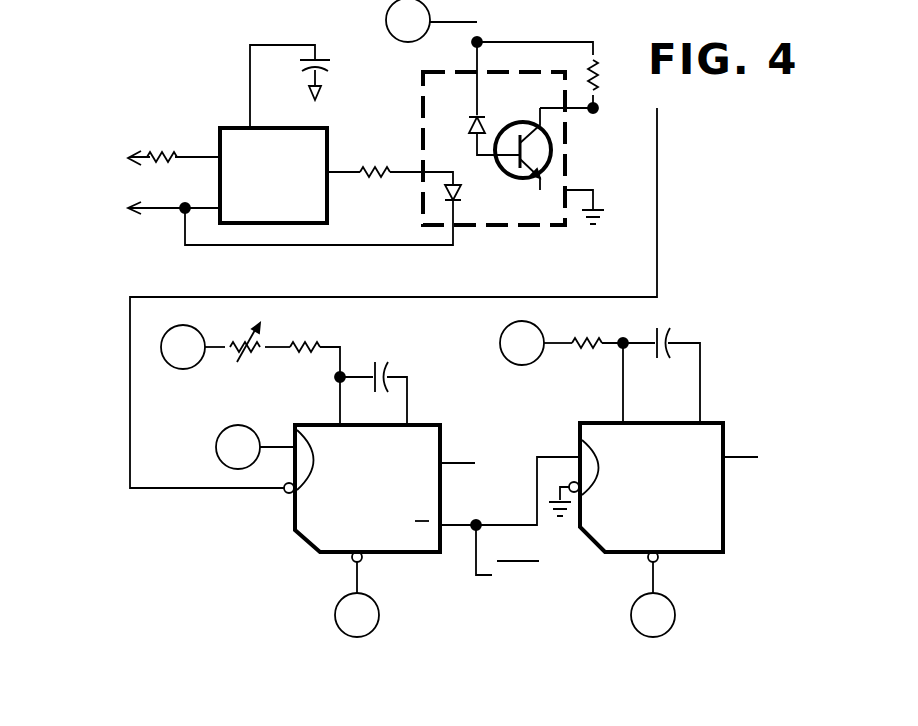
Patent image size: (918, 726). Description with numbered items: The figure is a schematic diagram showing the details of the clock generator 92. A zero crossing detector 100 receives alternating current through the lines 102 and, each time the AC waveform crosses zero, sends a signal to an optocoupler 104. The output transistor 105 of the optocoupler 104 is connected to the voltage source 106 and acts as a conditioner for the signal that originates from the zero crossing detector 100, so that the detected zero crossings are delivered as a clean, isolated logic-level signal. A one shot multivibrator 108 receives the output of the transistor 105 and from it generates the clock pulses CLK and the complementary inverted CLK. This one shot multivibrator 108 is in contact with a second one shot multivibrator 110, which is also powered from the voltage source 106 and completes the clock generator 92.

The clock generator 92 is at (724, 332).
The zero crossing detector 100 is at (232, 128).
The lines 102 is at (159, 245).
The optocoupler 104 is at (516, 72).
The output transistor 105 is at (552, 138).
The voltage source 106 is at (179, 370).
The one shot multivibrator 108 is at (440, 428).
The one shot multivibrator 110 is at (723, 425).